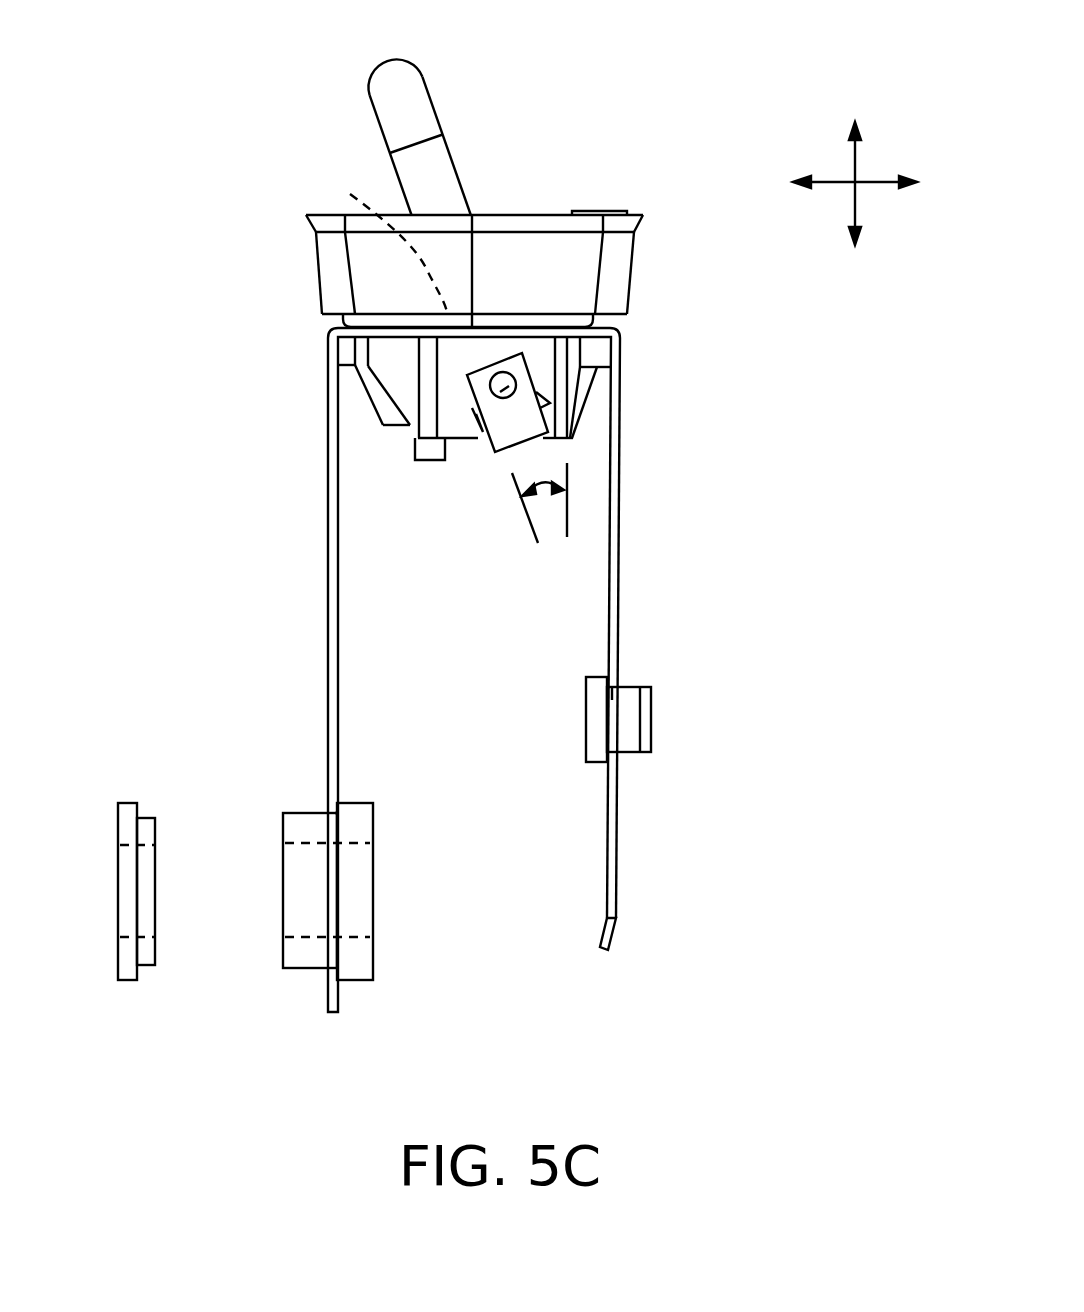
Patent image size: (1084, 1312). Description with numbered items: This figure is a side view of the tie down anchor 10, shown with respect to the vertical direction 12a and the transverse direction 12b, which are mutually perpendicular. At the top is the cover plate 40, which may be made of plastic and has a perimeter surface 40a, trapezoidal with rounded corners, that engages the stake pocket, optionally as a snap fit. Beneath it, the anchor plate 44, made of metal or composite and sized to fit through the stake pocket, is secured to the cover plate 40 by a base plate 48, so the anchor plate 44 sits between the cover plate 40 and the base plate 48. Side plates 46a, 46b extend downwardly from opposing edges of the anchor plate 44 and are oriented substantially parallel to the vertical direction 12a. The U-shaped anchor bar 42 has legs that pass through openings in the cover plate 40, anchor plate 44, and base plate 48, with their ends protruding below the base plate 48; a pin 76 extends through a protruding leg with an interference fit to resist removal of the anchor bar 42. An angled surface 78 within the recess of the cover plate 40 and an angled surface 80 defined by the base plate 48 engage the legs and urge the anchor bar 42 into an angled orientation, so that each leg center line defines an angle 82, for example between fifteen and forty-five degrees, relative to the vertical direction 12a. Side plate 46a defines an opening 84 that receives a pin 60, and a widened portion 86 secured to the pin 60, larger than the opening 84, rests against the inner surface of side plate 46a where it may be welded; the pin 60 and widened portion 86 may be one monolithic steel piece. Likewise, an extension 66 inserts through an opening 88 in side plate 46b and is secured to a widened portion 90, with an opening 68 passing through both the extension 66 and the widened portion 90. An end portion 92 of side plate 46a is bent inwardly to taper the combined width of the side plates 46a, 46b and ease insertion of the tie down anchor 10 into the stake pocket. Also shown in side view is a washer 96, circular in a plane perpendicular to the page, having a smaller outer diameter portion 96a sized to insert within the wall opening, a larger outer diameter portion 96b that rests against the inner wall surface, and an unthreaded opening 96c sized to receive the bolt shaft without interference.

The tie down anchor 10 is at (548, 80).
The vertical direction 12a is at (855, 160).
The transverse direction 12b is at (857, 185).
The cover plate 40 is at (332, 278).
The perimeter surface 40a is at (638, 226).
The anchor bar 42 is at (427, 123).
The anchor plate 44 is at (620, 342).
The side plate 46a is at (607, 620).
The side plate 46b is at (340, 634).
The base plate 48 is at (457, 368).
The pin 60 is at (625, 728).
The extension 66 is at (285, 815).
The opening 68 is at (370, 845).
The pin 76 is at (507, 388).
The angled surface 78 is at (380, 244).
The angled surface 80 is at (477, 408).
The angle 82 is at (540, 487).
The opening 84 is at (612, 687).
The widened portion 86 is at (597, 720).
The opening 88 is at (335, 813).
The widened portion 90 is at (358, 802).
The end portion 92 is at (598, 932).
The washer 96 is at (128, 811).
The smaller outer diameter portion 96a is at (142, 818).
The larger outer diameter portion 96b is at (123, 803).
The opening 96c is at (127, 843).